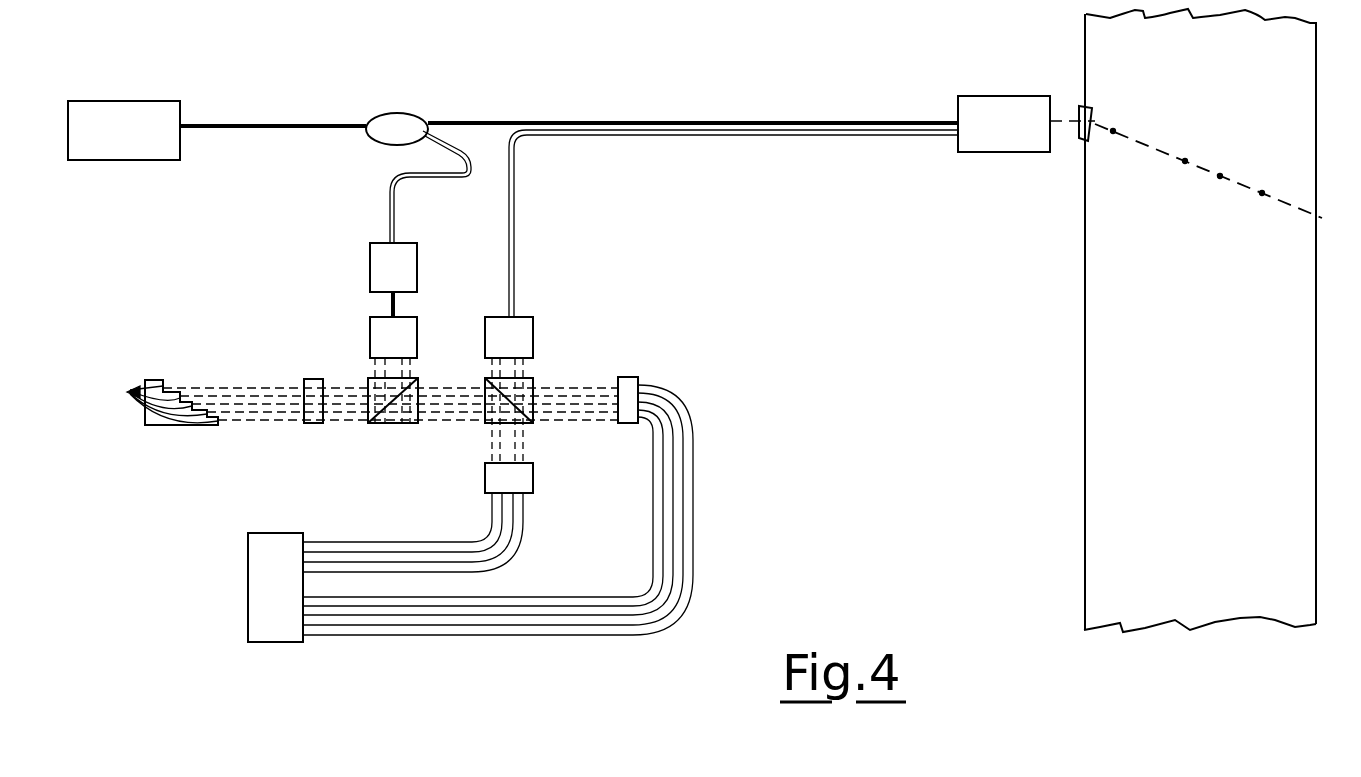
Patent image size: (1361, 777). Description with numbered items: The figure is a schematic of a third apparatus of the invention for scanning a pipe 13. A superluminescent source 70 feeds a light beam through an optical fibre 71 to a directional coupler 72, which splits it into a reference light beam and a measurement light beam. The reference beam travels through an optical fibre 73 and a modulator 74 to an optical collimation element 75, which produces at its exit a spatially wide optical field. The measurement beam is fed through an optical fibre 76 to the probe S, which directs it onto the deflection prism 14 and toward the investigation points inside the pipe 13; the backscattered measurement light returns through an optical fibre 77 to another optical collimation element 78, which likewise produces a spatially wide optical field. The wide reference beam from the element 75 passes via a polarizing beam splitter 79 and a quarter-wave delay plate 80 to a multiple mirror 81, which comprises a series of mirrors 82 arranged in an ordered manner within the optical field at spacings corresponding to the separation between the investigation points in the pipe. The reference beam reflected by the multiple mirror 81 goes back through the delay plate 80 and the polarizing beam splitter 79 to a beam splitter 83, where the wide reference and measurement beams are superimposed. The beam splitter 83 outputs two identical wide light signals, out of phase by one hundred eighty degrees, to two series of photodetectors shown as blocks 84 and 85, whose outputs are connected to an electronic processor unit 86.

The superluminescent source 70 is at (165, 116).
The optical fibre 71 is at (290, 121).
The directional coupler 72 is at (404, 126).
The optical fibre 73 is at (388, 191).
The modulator 74 is at (370, 262).
The optical collimation element 75 is at (370, 334).
The optical fibre 76 is at (655, 120).
The optical fibre 77 is at (772, 138).
The optical collimation element 78 is at (520, 334).
The polarizing beam splitter 79 is at (395, 425).
The quarter-wave delay plate 80 is at (313, 425).
The multiple mirror 81 is at (178, 427).
The mirrors 82 is at (152, 394).
The beam splitter 83 is at (520, 388).
The series of photodetectors 84 is at (632, 386).
The series of photodetectors 85 is at (520, 482).
The electronic processor unit 86 is at (277, 645).
The probe S is at (978, 104).
The deflection prism 14 is at (1090, 118).
The pipe 13 is at (1316, 116).